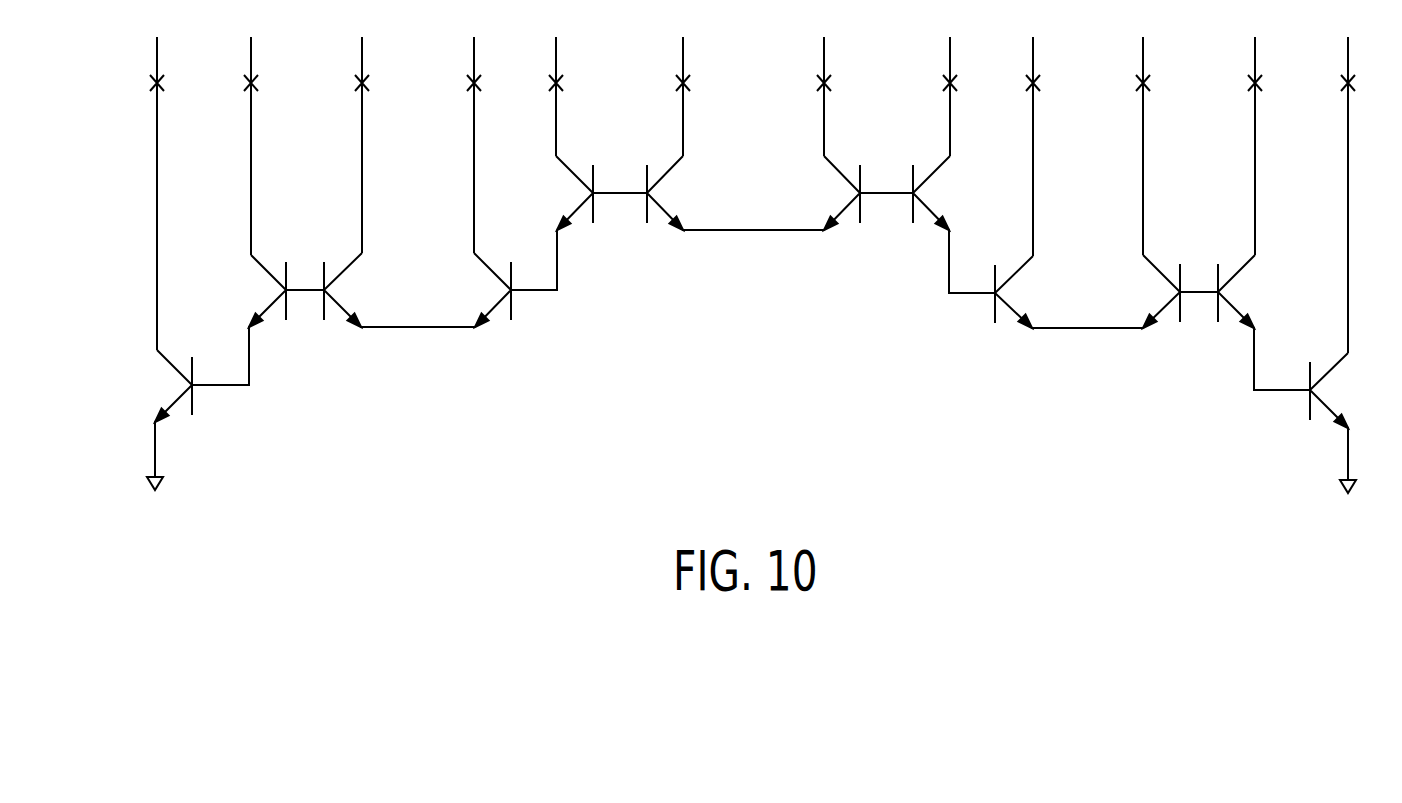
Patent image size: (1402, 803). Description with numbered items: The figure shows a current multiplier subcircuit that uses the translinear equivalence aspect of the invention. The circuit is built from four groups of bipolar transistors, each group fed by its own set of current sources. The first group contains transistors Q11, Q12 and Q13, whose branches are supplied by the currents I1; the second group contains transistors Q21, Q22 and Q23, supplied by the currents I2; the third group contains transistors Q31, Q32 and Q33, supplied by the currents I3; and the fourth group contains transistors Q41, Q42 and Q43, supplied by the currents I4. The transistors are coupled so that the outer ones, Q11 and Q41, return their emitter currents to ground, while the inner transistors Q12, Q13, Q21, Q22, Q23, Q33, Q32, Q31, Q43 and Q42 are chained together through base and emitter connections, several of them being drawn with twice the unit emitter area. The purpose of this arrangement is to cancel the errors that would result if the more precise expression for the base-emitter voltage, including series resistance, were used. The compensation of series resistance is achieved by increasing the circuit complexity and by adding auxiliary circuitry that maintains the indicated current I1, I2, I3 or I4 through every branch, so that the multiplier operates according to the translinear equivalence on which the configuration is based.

The current I1 is at (276, 193).
The current I2 is at (595, 145).
The current I3 is at (945, 146).
The current I4 is at (1262, 195).
The transistor Q11 is at (147, 413).
The transistor Q12 is at (258, 317).
The transistor Q13 is at (399, 287).
The transistor Q21 is at (492, 278).
The transistor Q22 is at (577, 191).
The transistor Q23 is at (735, 191).
The transistor Q31 is at (1069, 288).
The transistor Q32 is at (955, 222).
The transistor Q33 is at (842, 191).
The transistor Q41 is at (1356, 414).
The transistor Q42 is at (1264, 319).
The transistor Q43 is at (1157, 288).